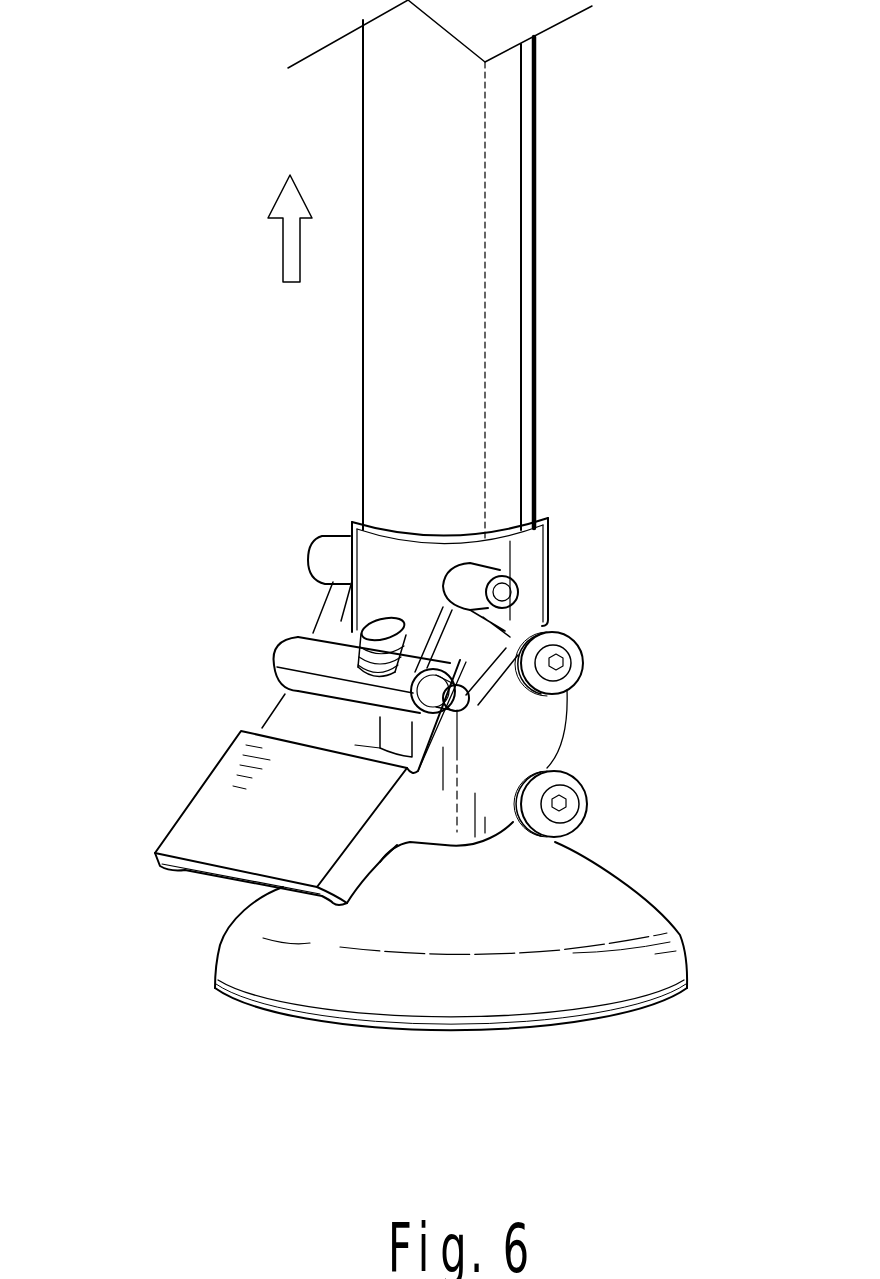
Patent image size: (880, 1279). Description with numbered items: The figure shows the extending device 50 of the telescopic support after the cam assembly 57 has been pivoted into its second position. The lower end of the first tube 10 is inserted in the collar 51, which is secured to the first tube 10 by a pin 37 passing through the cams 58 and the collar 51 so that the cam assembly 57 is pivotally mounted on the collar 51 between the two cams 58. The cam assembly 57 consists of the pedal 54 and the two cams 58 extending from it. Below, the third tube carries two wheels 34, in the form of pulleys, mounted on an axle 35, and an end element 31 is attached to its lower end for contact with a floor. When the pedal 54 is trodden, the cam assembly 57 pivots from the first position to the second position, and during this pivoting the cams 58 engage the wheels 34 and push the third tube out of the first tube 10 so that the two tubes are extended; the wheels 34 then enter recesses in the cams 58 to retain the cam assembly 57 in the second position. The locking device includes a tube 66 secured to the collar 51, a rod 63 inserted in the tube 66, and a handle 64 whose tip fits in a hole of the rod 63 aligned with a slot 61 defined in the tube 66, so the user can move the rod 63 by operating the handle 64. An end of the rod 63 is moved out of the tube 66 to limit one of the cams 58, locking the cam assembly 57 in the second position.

The first tube 10 is at (722, 293).
The extending device 50 is at (205, 500).
The collar 51 is at (530, 560).
The handle 64 is at (375, 624).
The tube 66 is at (290, 665).
The slot 61 is at (340, 670).
The cam 58 is at (513, 655).
The pin 37 is at (558, 663).
The rod 63 is at (462, 694).
The wheel 34 is at (560, 768).
The axle 35 is at (567, 803).
The end element 31 is at (613, 912).
The pedal 54 is at (230, 773).
The cam assembly 57 is at (150, 811).